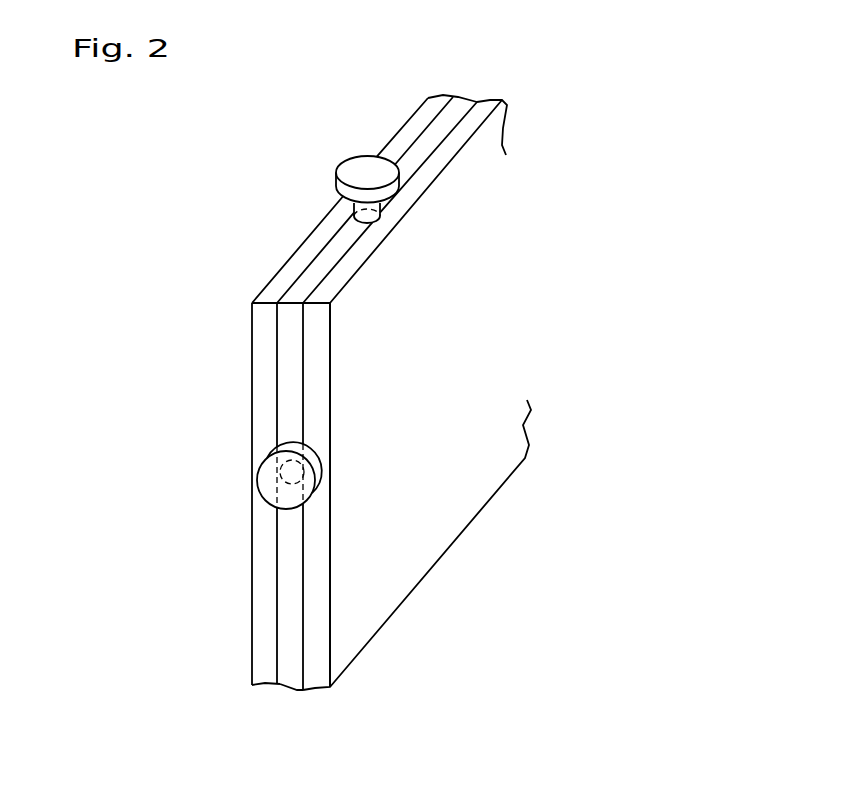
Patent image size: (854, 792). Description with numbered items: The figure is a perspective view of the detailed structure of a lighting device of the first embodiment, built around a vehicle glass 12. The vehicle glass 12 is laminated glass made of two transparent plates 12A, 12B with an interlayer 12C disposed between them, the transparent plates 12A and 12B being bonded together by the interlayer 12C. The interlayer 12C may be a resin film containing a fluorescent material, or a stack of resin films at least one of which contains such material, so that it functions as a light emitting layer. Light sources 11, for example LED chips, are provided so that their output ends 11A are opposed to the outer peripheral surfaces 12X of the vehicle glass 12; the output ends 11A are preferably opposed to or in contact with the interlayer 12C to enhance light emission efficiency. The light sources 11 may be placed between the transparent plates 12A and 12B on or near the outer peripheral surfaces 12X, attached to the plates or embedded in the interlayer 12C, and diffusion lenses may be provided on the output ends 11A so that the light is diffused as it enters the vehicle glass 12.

The light source 11 is at (348, 170).
The output end 11A is at (367, 222).
The vehicle glass 12 is at (301, 392).
The transparent plate 12A is at (262, 350).
The transparent plate 12B is at (318, 372).
The interlayer 12C is at (292, 317).
The outer peripheral surface 12X is at (256, 401).